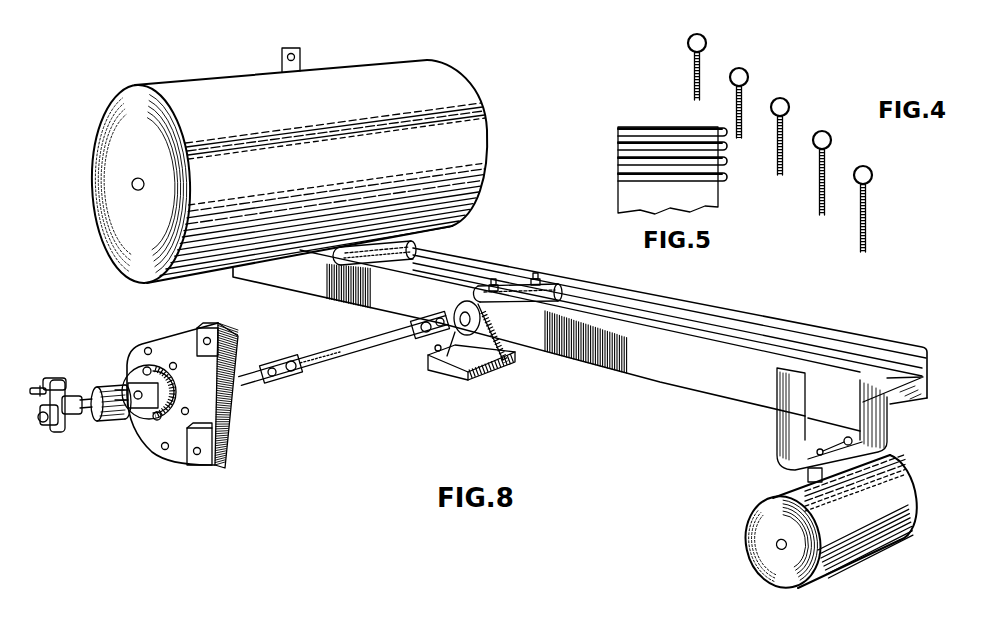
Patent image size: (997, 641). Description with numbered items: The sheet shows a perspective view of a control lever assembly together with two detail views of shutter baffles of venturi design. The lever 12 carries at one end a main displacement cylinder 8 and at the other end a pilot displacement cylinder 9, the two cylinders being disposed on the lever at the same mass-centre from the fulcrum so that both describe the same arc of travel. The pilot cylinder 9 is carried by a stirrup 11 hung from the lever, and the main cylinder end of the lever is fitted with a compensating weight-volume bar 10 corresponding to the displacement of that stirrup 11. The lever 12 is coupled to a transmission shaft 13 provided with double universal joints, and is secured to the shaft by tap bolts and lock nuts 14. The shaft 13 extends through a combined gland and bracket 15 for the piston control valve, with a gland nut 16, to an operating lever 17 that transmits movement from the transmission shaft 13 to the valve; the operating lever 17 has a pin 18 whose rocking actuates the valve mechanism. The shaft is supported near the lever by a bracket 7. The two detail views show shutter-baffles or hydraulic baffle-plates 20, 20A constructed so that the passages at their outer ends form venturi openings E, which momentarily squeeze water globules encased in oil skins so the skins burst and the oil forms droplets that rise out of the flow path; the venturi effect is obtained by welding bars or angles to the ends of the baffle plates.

In FIG. 8, the pillow block bracket 7 is at (495, 372).
In FIG. 8, the main displacement cylinder 8 is at (457, 125).
In FIG. 8, the pilot displacement cylinder 9 is at (897, 490).
In FIG. 8, the compensating weight-volume bar 10 is at (373, 242).
In FIG. 8, the stirrup 11 is at (872, 421).
In FIG. 8, the lever 12 is at (652, 357).
In FIG. 8, the transmission shaft 13 is at (353, 353).
In FIG. 8, the tap bolts and lock nuts 14 is at (539, 277).
In FIG. 8, the combined gland and bracket 15 is at (177, 440).
In FIG. 8, the gland nut 16 is at (115, 407).
In FIG. 8, the operating lever 17 is at (67, 433).
In FIG. 8, the pin 18 is at (37, 386).
In FIG. 5, the shutter-baffles 20 is at (625, 180).
In FIG. 4, the shutter-baffles 20A is at (881, 213).
In FIG. 4, the venturi openings E is at (758, 92).